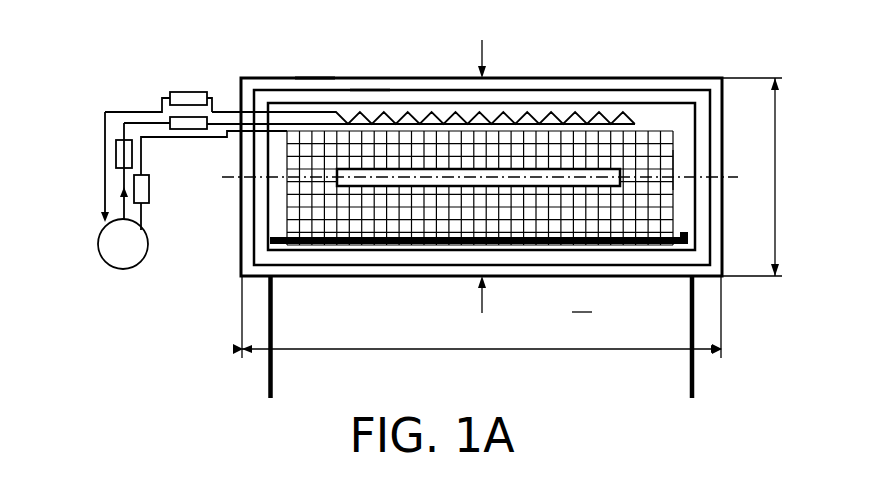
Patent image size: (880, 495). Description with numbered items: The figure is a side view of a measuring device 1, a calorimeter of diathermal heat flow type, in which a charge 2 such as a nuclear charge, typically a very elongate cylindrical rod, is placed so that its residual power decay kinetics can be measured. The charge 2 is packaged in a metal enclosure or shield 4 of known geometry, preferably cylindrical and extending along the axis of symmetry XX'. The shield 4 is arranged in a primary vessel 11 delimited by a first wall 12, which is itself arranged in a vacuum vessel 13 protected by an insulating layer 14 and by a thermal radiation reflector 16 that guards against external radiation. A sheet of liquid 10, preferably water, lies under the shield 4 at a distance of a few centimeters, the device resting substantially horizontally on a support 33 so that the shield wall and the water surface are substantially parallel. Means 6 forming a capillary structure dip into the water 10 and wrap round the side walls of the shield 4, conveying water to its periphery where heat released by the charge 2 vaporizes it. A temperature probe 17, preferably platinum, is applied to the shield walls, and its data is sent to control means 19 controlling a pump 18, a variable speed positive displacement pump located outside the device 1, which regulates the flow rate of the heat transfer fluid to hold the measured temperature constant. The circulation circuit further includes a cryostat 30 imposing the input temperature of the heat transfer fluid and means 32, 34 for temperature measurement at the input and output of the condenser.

The measuring device 1 is at (118, 90).
The charge 2 is at (353, 180).
The shield 4 is at (667, 218).
The capillary structure means 6 is at (675, 168).
The sheet of liquid 10 is at (418, 240).
The primary vessel 11 is at (667, 113).
The first wall 12 is at (511, 102).
The vacuum vessel 13 is at (599, 92).
The insulating layer 14 is at (368, 86).
The thermal radiation reflector 16 is at (313, 77).
The temperature probe 17 is at (453, 140).
The pump 18 is at (117, 253).
The control means 19 is at (143, 190).
The cryostat 30 is at (120, 155).
The temperature measurement means 32 is at (187, 124).
The support 33 is at (581, 302).
The temperature measurement means 34 is at (189, 97).